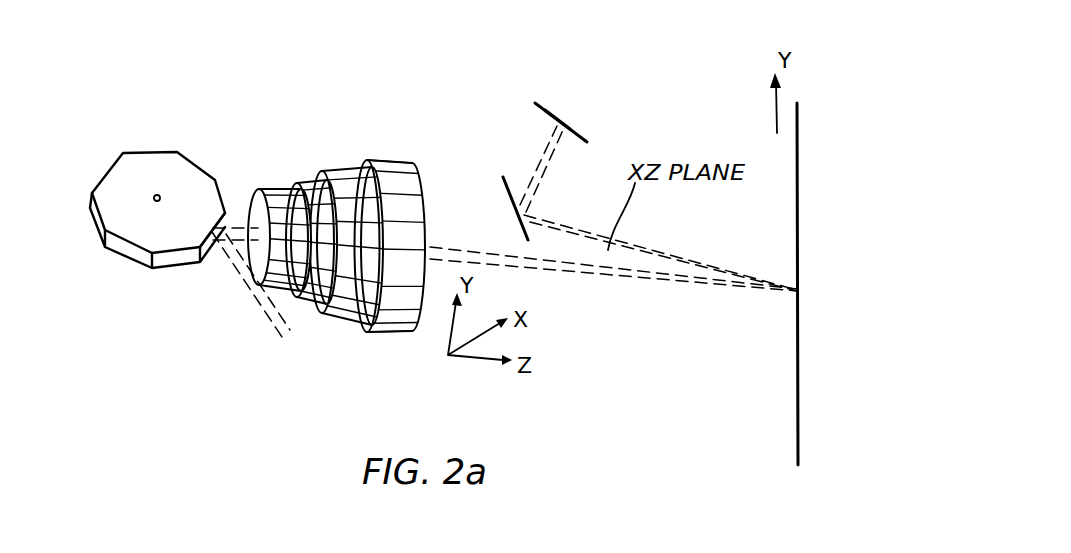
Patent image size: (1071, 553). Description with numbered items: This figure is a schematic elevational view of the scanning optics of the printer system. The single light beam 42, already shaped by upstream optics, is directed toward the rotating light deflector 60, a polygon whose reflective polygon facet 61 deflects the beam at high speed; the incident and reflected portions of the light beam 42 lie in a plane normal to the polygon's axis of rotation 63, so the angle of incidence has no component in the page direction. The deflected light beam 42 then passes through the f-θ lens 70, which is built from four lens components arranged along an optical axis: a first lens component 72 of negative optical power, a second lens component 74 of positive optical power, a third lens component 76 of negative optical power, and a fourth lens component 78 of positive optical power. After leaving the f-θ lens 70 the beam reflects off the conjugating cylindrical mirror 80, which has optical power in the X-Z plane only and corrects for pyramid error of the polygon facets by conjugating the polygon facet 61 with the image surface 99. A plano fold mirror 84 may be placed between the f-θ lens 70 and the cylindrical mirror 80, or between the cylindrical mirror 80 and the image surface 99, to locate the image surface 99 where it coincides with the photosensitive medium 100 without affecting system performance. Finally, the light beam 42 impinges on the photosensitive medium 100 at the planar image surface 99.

The single light beam 42 is at (258, 300).
The light deflector (polygon) 60 is at (176, 181).
The polygon facet 61 is at (224, 226).
The axis of rotation 63 is at (154, 195).
The f-θ lens 70 is at (339, 226).
The first lens component 72 is at (270, 288).
The second lens component 74 is at (305, 300).
The third lens component 76 is at (336, 310).
The fourth lens component 78 is at (391, 326).
The cylindrical mirror 80 is at (797, 350).
The plano fold mirror 84 is at (507, 190).
The image surface 99 is at (555, 122).
The photosensitive medium 100 is at (548, 105).